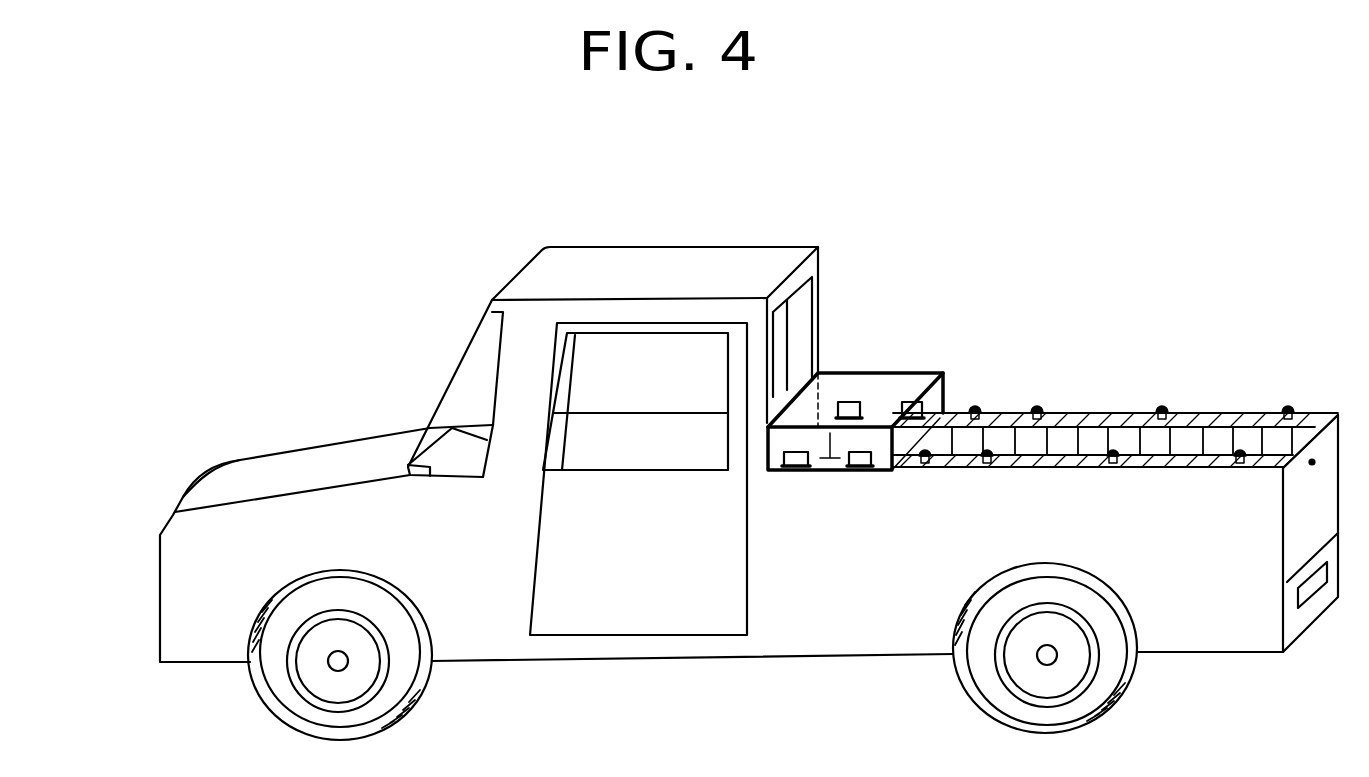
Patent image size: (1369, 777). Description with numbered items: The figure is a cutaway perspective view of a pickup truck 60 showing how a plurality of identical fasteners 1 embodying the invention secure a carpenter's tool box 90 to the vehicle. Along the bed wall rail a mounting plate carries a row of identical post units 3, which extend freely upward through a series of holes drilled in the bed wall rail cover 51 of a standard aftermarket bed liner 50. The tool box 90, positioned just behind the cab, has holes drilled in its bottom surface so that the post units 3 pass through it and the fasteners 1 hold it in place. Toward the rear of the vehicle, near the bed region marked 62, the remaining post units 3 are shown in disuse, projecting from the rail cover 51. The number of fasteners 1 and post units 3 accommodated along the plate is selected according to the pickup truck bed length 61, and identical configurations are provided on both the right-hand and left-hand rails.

The pickup truck 60 is at (336, 386).
The pickup truck bed length 61 is at (862, 557).
The cargo bed 62 is at (925, 570).
The carpenter's tool box 90 is at (937, 372).
The fastener 1 is at (920, 398).
The post unit 3 is at (1038, 408).
The bed liner 50 is at (1267, 440).
The bed wall rail cover 51 is at (972, 443).